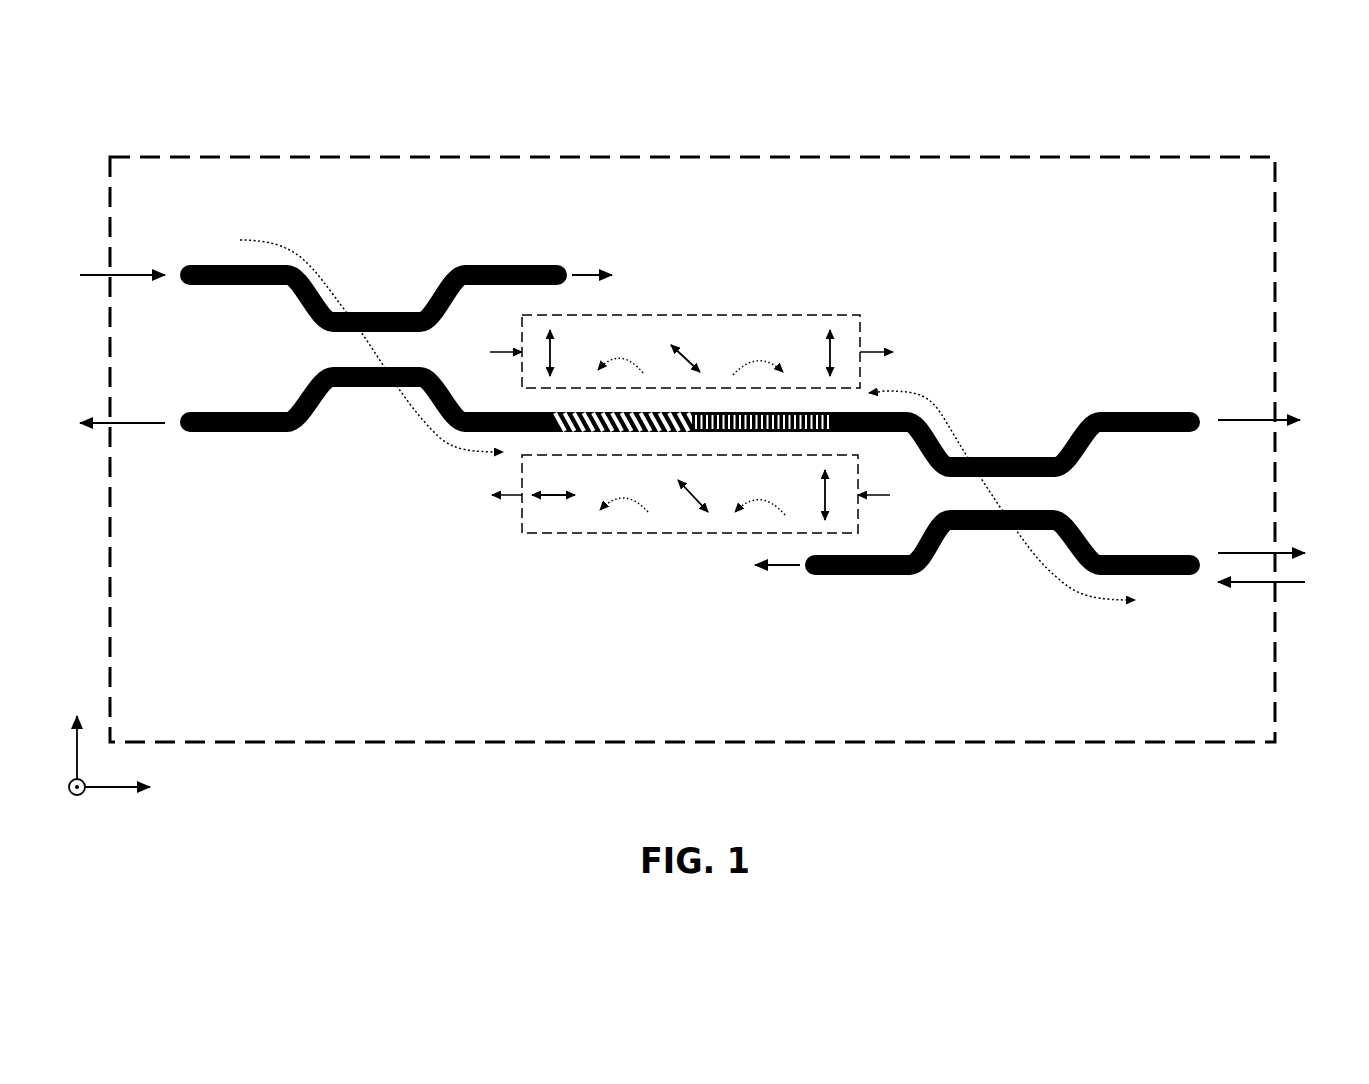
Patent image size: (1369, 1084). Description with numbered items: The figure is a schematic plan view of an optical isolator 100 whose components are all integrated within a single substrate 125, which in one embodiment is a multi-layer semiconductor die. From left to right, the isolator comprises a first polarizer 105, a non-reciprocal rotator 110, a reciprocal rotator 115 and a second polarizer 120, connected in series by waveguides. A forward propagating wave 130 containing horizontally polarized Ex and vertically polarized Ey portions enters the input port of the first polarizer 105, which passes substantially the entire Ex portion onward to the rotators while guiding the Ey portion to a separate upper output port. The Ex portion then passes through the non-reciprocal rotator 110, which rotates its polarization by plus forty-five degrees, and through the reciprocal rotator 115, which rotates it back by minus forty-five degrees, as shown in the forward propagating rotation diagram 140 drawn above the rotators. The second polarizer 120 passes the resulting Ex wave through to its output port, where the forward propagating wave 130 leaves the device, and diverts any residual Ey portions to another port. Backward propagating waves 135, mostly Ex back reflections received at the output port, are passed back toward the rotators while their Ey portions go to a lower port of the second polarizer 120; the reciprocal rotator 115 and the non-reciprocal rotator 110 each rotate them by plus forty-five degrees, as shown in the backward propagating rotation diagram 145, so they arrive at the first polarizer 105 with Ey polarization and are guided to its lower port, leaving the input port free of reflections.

The optical isolator 100 is at (952, 188).
The first polarizer 105 is at (346, 454).
The non-reciprocal rotator 110 is at (597, 432).
The reciprocal rotator 115 is at (790, 412).
The second polarizer 120 is at (1027, 385).
The substrate 125 is at (692, 449).
The forward propagating wave 130 is at (119, 278).
The backward propagating waves 135 is at (1280, 582).
The forward propagating rotation diagram 140 is at (617, 315).
The backward propagating rotation diagram 145 is at (593, 535).